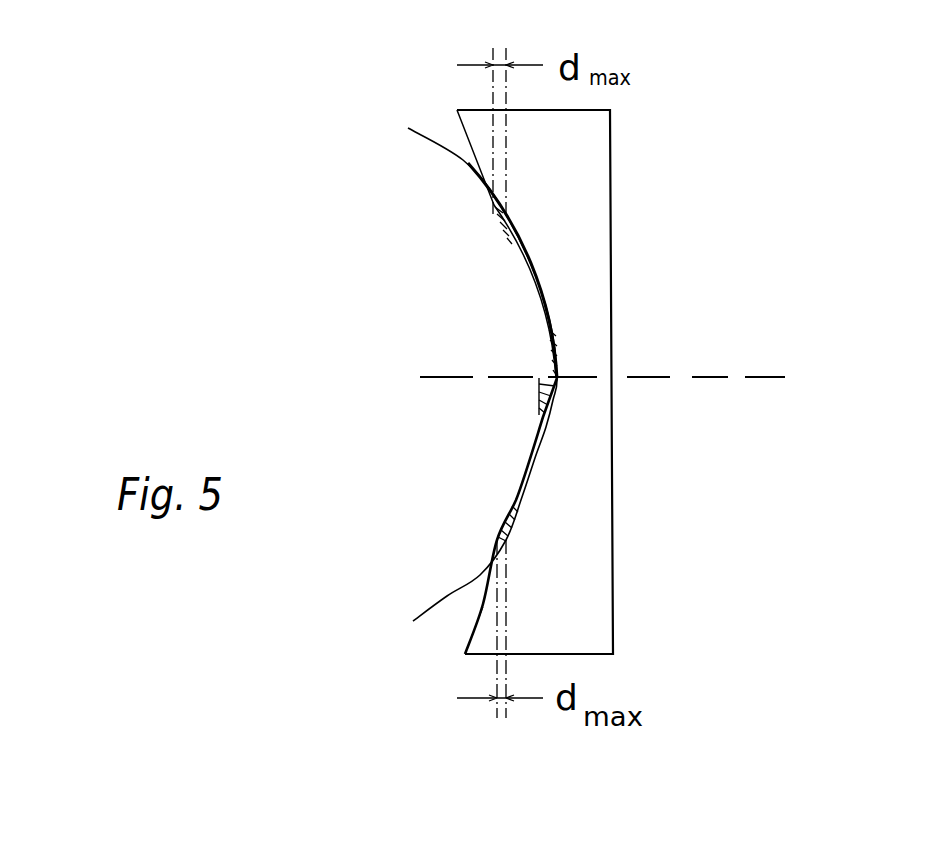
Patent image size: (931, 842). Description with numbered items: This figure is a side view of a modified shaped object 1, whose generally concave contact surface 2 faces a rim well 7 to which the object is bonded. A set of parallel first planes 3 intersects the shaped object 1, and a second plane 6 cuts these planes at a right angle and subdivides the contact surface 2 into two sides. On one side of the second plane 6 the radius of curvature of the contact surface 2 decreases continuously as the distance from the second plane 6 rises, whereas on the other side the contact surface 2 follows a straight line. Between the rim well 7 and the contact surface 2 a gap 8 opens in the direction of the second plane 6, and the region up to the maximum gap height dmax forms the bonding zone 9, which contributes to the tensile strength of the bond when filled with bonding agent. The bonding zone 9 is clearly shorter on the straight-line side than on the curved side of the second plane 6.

The shaped object 1 is at (603, 248).
The contact surface 2 is at (483, 610).
The first planes 3 is at (775, 520).
The second plane 6 is at (748, 379).
The rim well 7 is at (442, 152).
The gap 8 is at (467, 166).
The bonding zone 9 is at (550, 356).